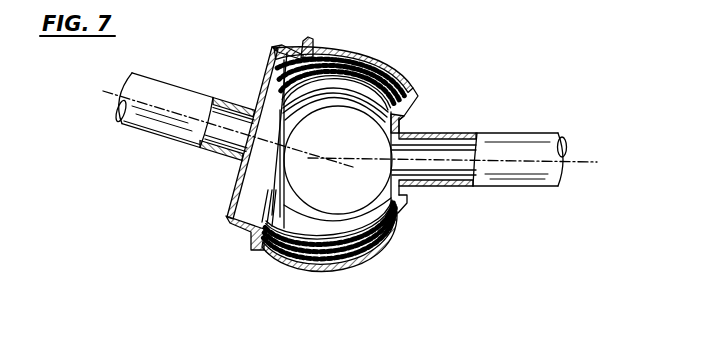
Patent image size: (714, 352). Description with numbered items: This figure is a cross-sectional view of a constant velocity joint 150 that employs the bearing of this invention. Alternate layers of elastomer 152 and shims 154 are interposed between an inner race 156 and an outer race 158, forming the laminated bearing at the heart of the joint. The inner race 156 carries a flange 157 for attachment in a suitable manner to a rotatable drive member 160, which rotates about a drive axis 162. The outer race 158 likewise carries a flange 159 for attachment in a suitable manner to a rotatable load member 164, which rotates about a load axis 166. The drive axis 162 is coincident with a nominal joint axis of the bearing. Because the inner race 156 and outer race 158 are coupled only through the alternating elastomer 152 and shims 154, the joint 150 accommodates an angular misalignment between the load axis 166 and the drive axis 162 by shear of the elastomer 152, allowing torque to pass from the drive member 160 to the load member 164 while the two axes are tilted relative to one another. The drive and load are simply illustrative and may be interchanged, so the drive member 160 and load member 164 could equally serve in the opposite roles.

The constant velocity joint 150 is at (416, 45).
The elastomer 152 is at (301, 266).
The shims 154 is at (348, 266).
The inner race 156 is at (333, 80).
The flange 157 is at (401, 199).
The outer race 158 is at (357, 53).
The flange 159 is at (318, 47).
The rotatable drive member 160 is at (511, 121).
The drive axis 162 is at (575, 156).
The rotatable load member 164 is at (167, 84).
The load axis 166 is at (119, 88).